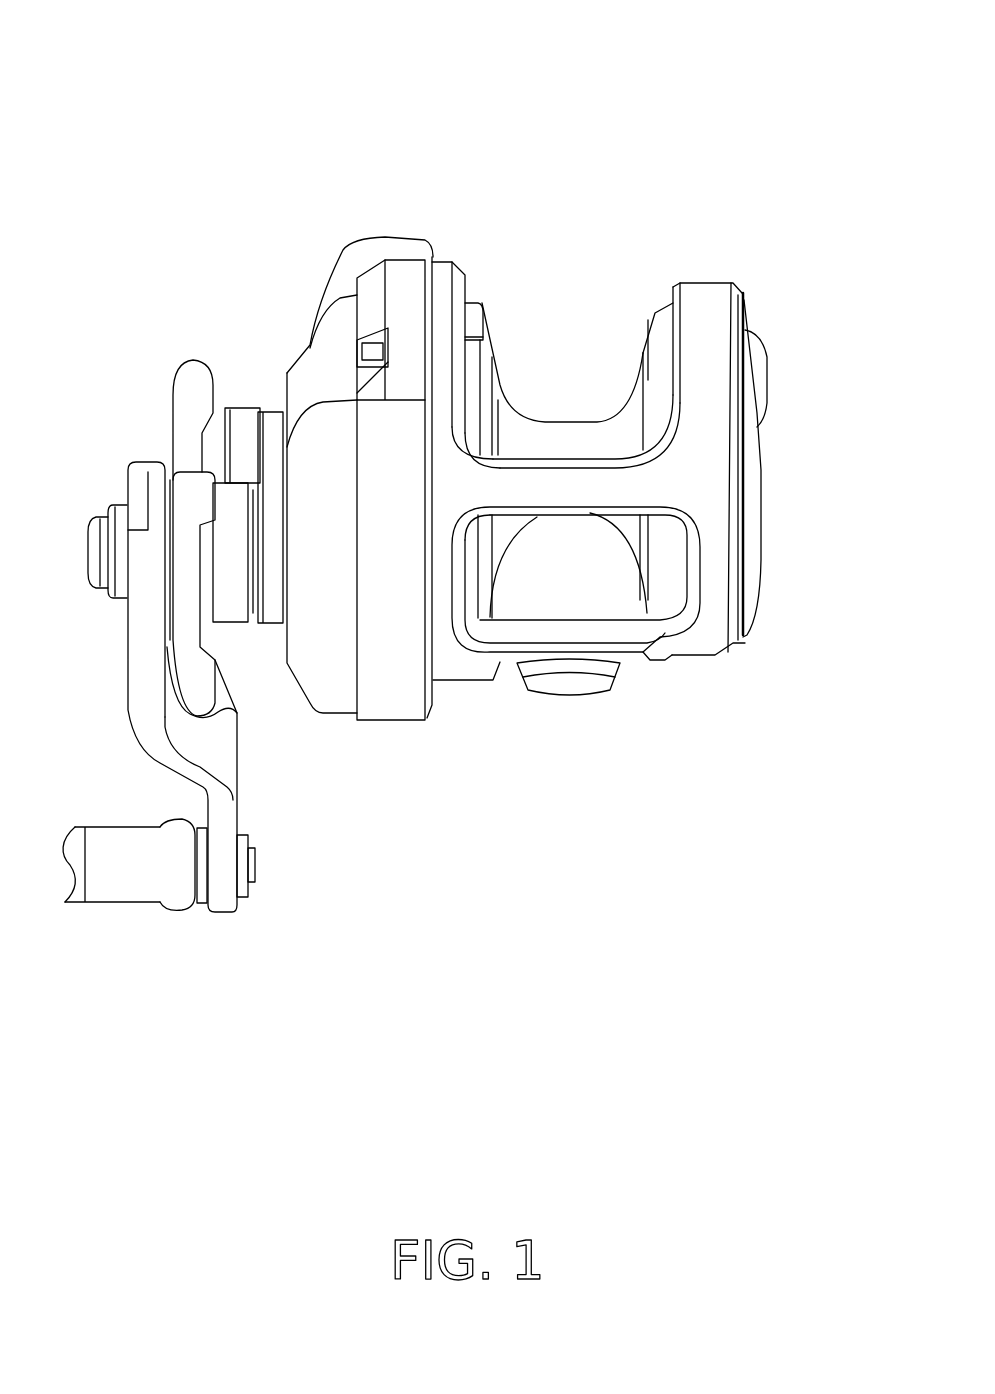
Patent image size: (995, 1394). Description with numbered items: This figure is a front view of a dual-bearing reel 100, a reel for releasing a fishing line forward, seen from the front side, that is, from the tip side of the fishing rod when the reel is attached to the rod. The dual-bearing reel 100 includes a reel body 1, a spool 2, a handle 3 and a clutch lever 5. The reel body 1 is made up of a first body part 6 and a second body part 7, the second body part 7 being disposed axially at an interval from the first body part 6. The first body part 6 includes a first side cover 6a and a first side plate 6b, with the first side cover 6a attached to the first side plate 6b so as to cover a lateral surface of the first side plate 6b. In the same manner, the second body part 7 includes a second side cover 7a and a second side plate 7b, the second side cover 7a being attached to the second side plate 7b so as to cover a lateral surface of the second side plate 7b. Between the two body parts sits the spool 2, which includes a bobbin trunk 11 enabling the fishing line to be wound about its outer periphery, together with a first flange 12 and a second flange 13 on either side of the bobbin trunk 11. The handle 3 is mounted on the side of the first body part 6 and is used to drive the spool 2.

The dual-bearing reel 100 is at (247, 115).
The reel body 1 is at (288, 327).
The spool 2 is at (593, 527).
The handle 3 is at (125, 900).
The clutch lever 5 is at (350, 238).
The first body part 6 is at (430, 222).
The first side cover 6a is at (397, 260).
The first side plate 6b is at (448, 258).
The second body part 7 is at (752, 257).
The second side cover 7a is at (763, 477).
The second side plate 7b is at (707, 282).
The bobbin trunk 11 is at (593, 420).
The first flange 12 is at (513, 317).
The second flange 13 is at (650, 290).